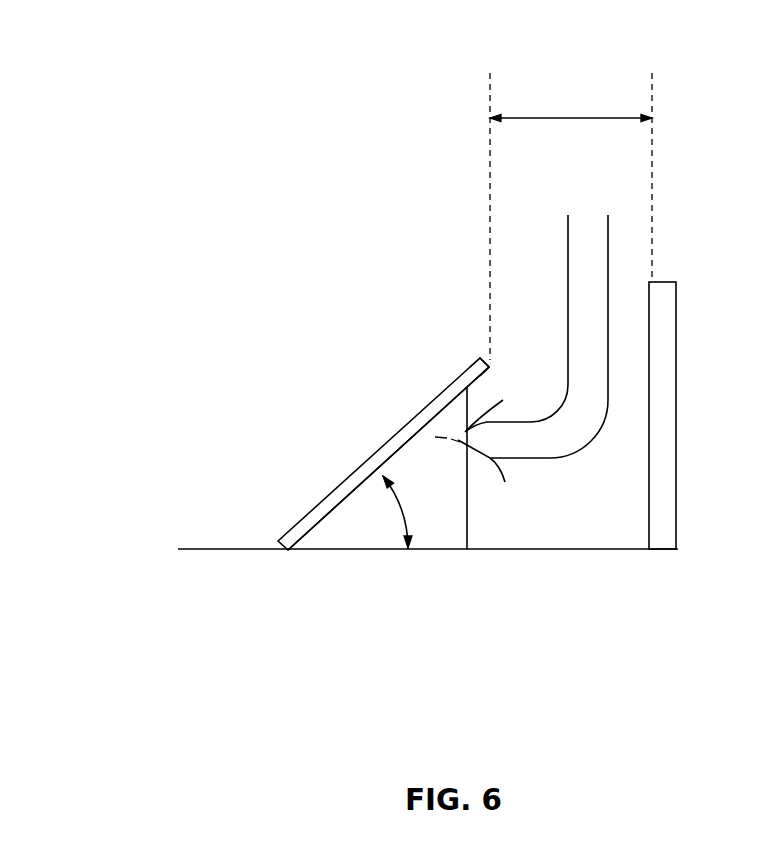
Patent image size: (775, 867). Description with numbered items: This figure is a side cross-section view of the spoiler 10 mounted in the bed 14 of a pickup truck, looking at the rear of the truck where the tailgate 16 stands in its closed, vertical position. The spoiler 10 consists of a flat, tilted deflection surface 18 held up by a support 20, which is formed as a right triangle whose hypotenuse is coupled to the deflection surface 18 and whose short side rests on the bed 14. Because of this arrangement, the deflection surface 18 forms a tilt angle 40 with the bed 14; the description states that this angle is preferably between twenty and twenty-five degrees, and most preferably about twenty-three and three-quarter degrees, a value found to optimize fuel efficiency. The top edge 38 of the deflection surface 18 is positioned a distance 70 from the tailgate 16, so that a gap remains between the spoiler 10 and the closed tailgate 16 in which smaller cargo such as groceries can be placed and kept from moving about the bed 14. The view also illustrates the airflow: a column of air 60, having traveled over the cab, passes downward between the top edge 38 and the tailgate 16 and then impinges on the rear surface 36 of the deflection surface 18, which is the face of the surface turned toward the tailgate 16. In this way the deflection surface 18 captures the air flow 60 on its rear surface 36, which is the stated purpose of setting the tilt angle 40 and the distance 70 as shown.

The spoiler 10 is at (385, 446).
The bed 14 is at (202, 549).
The tailgate 16 is at (665, 445).
The deflection surface 18 is at (313, 512).
The support 20 is at (450, 512).
The rear surface 36 is at (337, 507).
The top edge 38 is at (480, 357).
The tilt angle 40 is at (405, 512).
The column of air 60 is at (579, 266).
The distance 70 is at (566, 118).